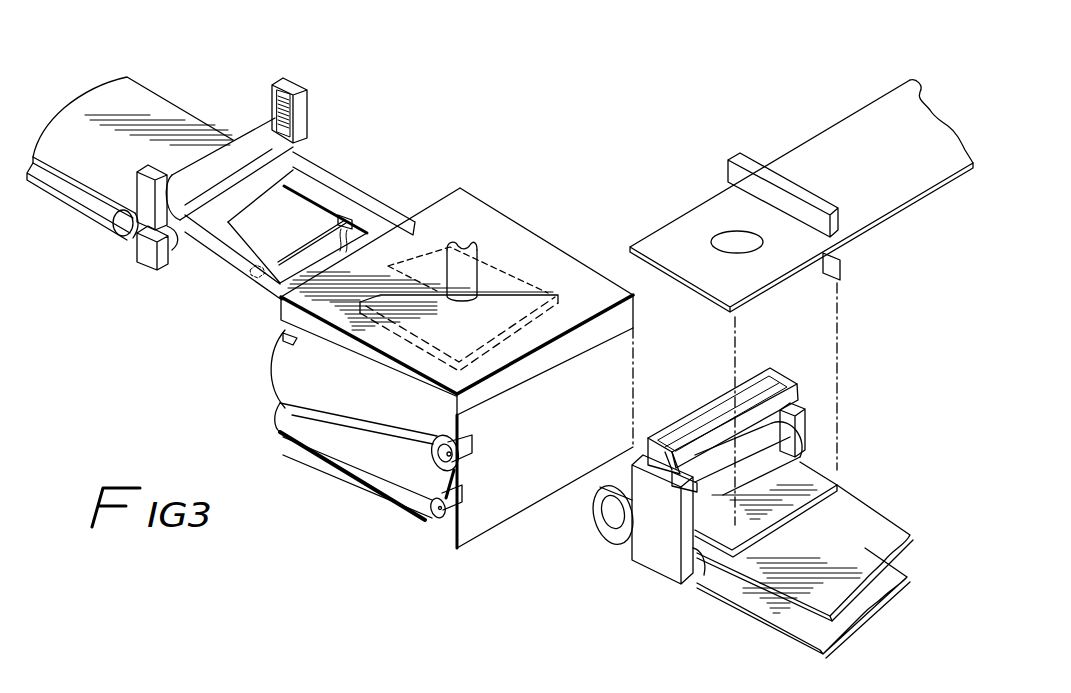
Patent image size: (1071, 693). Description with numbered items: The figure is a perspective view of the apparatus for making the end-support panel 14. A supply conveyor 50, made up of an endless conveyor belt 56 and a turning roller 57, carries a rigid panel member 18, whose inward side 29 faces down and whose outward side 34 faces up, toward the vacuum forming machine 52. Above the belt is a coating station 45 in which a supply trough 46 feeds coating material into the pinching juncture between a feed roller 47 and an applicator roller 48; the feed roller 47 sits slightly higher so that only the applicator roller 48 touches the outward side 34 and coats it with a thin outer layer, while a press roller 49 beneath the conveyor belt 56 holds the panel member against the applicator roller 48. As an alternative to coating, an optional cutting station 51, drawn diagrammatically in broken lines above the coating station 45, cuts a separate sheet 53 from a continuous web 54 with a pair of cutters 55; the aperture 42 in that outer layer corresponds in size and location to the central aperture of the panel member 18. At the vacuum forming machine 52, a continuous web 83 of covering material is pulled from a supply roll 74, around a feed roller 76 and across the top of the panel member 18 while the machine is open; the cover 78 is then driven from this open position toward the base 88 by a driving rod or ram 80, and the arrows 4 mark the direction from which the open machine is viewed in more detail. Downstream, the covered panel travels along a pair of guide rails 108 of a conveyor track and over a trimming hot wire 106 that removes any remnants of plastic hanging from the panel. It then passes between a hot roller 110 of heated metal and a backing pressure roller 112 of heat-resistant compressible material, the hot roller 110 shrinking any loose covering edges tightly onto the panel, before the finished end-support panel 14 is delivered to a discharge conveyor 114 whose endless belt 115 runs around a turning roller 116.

The section line of FIG. 4 is at (578, 200).
The end-support panel 14 is at (510, 265).
The rigid panel member 18 is at (824, 459).
The inward side 29 is at (413, 283).
The outward side 34 is at (778, 500).
The aperture 42 is at (748, 253).
The coating station 45 is at (812, 388).
The supply trough 46 is at (775, 377).
The feed roller 47 is at (800, 425).
The applicator roller 48 is at (829, 455).
The press roller 49 is at (710, 563).
The supply conveyor 50 is at (868, 493).
The cutting station 51 is at (722, 152).
The vacuum forming machine 52 is at (473, 180).
The separate sheet 53 is at (678, 240).
The continuous web 54 is at (870, 113).
The cutters 55 is at (740, 150).
The endless belt 56 is at (770, 580).
The turning roller 57 is at (617, 517).
The supply roll 74 is at (393, 487).
The feed roller 76 is at (426, 443).
The cover 78 is at (588, 287).
The driving rod or ram 80 is at (467, 272).
The continuous web of covering material 83 is at (287, 363).
The base 88 is at (545, 438).
The trimming hot wire 106 is at (317, 237).
The guide rails 108 is at (323, 170).
The hot roller 110 is at (180, 257).
The backing pressure roller 112 is at (253, 137).
The discharge conveyor 114 is at (182, 98).
The endless belt 115 is at (143, 103).
The turning roller 116 is at (110, 232).